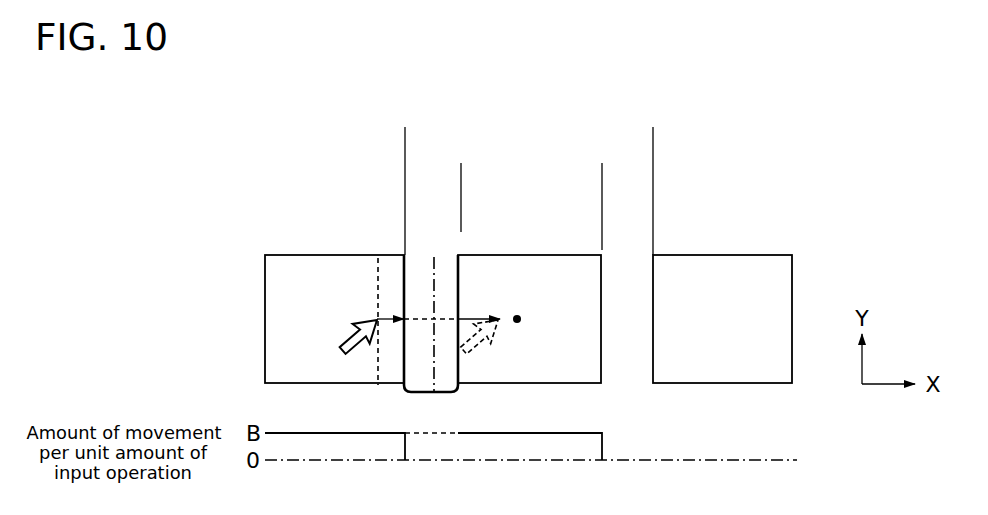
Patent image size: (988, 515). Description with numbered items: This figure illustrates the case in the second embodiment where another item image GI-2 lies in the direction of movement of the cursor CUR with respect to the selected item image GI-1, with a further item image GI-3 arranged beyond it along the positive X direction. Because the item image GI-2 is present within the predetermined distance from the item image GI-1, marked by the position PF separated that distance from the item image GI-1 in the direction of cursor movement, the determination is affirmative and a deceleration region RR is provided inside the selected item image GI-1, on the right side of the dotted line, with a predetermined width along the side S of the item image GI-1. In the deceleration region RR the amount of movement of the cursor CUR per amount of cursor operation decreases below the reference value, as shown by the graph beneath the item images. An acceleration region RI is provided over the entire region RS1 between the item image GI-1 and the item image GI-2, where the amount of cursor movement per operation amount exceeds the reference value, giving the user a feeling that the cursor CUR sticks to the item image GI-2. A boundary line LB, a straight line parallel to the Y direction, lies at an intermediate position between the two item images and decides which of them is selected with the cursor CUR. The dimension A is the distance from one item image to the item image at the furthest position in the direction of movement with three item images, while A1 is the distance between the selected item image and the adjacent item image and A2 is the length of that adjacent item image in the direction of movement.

The item image GI-1 is at (265, 300).
The item image GI-2 is at (547, 383).
The item image GI-3 is at (792, 292).
The cursor CUR is at (343, 347).
The position PF is at (521, 319).
The side S is at (404, 300).
The region RS1 is at (422, 273).
The boundary line LB is at (433, 266).
The deceleration region RR is at (397, 380).
The acceleration region RI is at (438, 392).
The distance A is at (406, 153).
The distance A1 is at (406, 188).
The length A2 is at (601, 188).